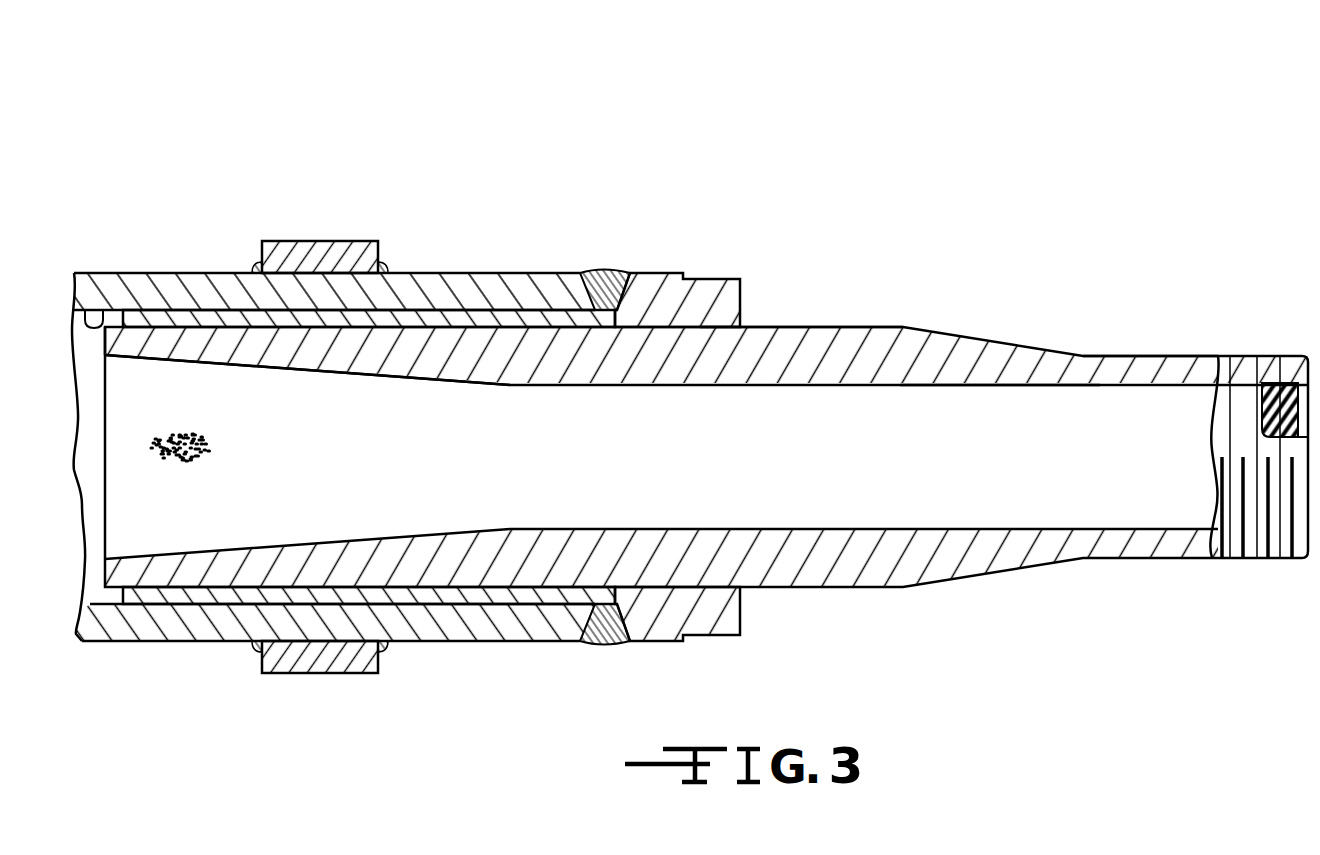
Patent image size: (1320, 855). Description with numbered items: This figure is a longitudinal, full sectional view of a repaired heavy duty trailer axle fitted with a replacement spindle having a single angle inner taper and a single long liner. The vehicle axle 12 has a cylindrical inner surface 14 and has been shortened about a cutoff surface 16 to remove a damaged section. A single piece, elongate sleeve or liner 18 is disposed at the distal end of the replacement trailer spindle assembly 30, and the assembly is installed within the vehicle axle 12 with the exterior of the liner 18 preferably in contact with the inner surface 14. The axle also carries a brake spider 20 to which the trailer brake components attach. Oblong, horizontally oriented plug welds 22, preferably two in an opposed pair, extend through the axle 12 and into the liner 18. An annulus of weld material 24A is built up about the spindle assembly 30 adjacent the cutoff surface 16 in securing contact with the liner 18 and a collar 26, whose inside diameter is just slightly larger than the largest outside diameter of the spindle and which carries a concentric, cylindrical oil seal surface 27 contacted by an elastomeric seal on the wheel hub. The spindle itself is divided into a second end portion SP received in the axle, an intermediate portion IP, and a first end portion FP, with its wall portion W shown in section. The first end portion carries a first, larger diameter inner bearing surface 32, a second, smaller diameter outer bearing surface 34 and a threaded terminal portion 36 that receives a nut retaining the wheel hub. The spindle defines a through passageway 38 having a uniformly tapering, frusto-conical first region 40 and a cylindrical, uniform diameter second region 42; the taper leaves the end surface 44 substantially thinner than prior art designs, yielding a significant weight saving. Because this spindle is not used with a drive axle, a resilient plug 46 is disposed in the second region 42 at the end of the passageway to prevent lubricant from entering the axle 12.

The vehicle axle 12 is at (415, 285).
The cylindrical inner surface 14 is at (105, 312).
The cutoff surface 16 is at (605, 290).
The sleeve or liner 18 is at (183, 318).
The brake spider 20 is at (325, 241).
The plug welds 22 is at (183, 462).
The annulus of weld material 24A is at (608, 632).
The collar 26 is at (737, 610).
The oil seal surface 27 is at (701, 273).
The replacement trailer spindle assembly 30 is at (912, 306).
The inner bearing surface 32 is at (823, 327).
The outer bearing surface 34 is at (1153, 356).
The threaded terminal portion 36 is at (1262, 558).
The through passageway 38 is at (743, 460).
The first region 40 is at (353, 373).
The second region 42 is at (1015, 385).
The end surface 44 is at (105, 338).
The resilient plug 46 is at (1272, 368).
The wall portion W is at (510, 385).
The second end portion SP is at (597, 122).
The intermediate portion IP is at (620, 122).
The first end portion FP is at (765, 122).